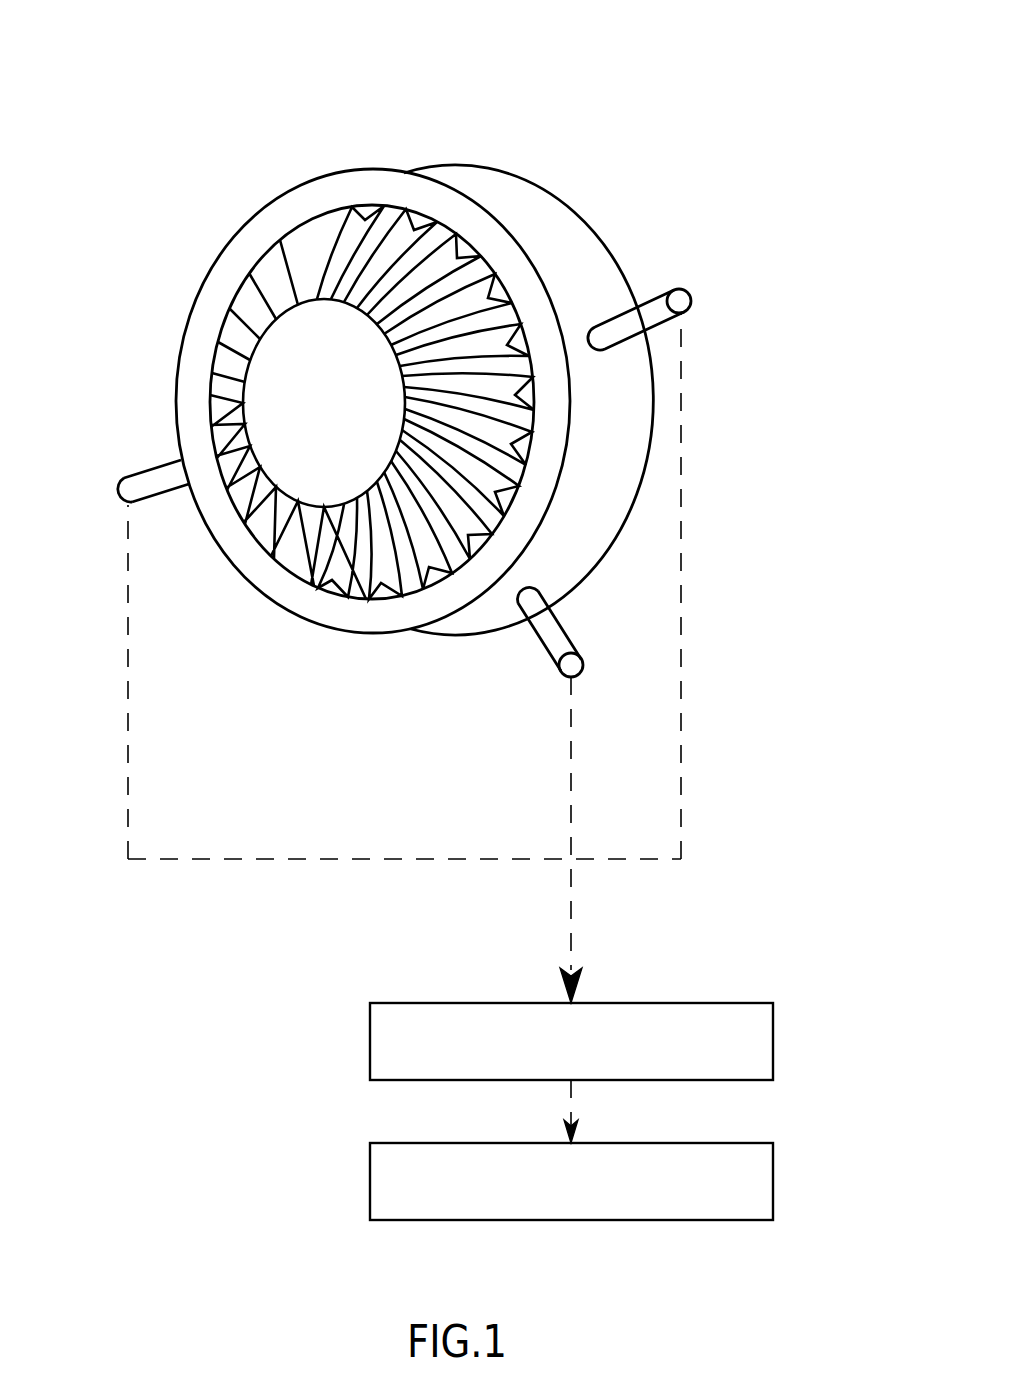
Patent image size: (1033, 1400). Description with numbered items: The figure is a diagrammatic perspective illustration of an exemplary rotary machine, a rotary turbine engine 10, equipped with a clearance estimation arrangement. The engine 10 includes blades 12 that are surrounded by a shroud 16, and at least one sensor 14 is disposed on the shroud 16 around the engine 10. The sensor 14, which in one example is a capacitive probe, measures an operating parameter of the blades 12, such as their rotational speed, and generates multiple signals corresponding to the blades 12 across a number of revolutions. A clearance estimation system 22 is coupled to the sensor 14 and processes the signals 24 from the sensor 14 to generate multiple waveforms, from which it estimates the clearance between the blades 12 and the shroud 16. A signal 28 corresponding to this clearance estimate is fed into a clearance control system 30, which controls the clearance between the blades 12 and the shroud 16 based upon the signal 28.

The rotary turbine engine 10 is at (148, 44).
The blades 12 is at (232, 392).
The sensor 14 is at (676, 292).
The shroud 16 is at (462, 166).
The clearance estimation system 22 is at (773, 1040).
The signals 24 is at (571, 893).
The signal 28 is at (572, 1095).
The clearance control system 30 is at (773, 1180).